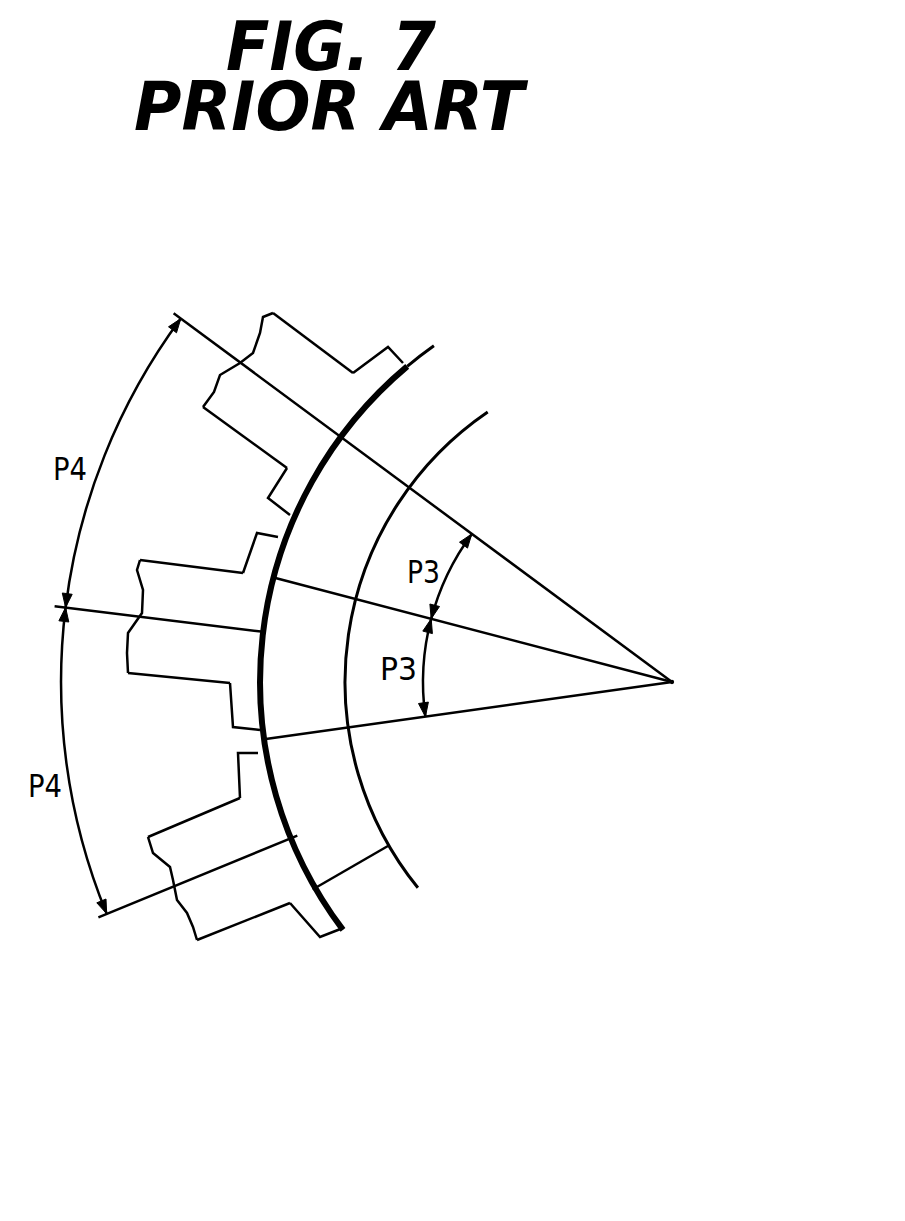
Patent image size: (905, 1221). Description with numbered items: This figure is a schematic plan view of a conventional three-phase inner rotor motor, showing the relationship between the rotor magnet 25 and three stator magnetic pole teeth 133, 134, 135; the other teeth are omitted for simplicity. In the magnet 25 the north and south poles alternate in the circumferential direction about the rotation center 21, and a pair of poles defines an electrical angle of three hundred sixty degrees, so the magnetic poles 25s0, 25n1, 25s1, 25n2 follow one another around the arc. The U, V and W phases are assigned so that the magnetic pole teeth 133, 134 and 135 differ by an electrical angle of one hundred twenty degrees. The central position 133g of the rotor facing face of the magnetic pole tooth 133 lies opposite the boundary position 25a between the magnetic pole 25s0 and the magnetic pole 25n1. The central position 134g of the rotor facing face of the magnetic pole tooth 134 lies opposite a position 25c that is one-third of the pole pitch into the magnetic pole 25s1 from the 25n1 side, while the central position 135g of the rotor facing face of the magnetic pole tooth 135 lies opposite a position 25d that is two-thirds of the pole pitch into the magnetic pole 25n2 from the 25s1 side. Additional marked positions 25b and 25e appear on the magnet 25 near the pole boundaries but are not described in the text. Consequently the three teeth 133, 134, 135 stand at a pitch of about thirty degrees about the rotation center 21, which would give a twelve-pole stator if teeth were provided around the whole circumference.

The rotation center 21 is at (672, 682).
The magnet 25 is at (375, 956).
The boundary position 25a is at (346, 434).
The magnetization boundary portion 25b is at (292, 527).
The position 25c is at (260, 629).
The position 25d is at (272, 748).
The magnetization boundary portion 25e is at (292, 838).
The magnetic pole 25s0 is at (413, 465).
The magnetic pole 25n1 is at (370, 518).
The magnetic pole 25s1 is at (330, 698).
The magnetic pole 25n2 is at (367, 832).
The magnetic pole tooth 133 is at (298, 350).
The central position 133g is at (336, 428).
The magnetic pole tooth 134 is at (158, 572).
The central position 134g is at (260, 633).
The magnetic pole tooth 135 is at (193, 833).
The central position 135g is at (277, 843).